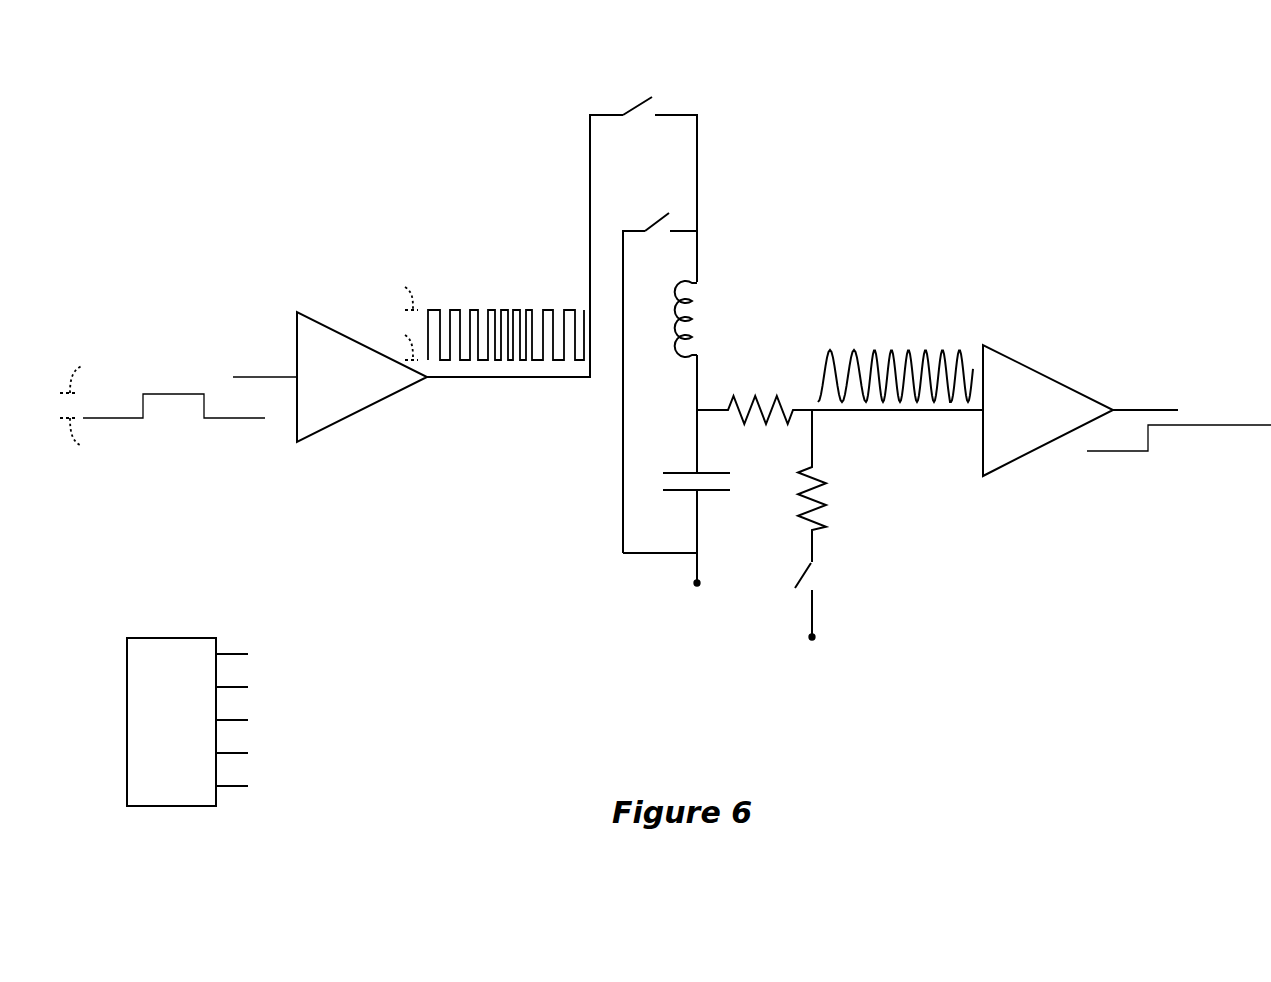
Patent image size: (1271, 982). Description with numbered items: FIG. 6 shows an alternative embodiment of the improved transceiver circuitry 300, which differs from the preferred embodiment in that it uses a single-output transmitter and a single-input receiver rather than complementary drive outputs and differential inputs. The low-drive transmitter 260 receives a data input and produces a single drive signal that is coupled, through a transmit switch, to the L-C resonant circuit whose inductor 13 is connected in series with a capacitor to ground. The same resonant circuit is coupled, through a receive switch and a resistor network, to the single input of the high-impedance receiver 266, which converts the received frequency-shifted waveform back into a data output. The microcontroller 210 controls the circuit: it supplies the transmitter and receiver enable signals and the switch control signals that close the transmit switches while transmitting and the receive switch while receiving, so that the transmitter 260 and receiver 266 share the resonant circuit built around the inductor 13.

The improved transceiver circuitry 300 is at (302, 77).
The transmitter 260 is at (297, 335).
The receiver 266 is at (1015, 360).
The microcontroller 210 is at (231, 722).
The L-C resonant circuit inductor 13 is at (718, 319).